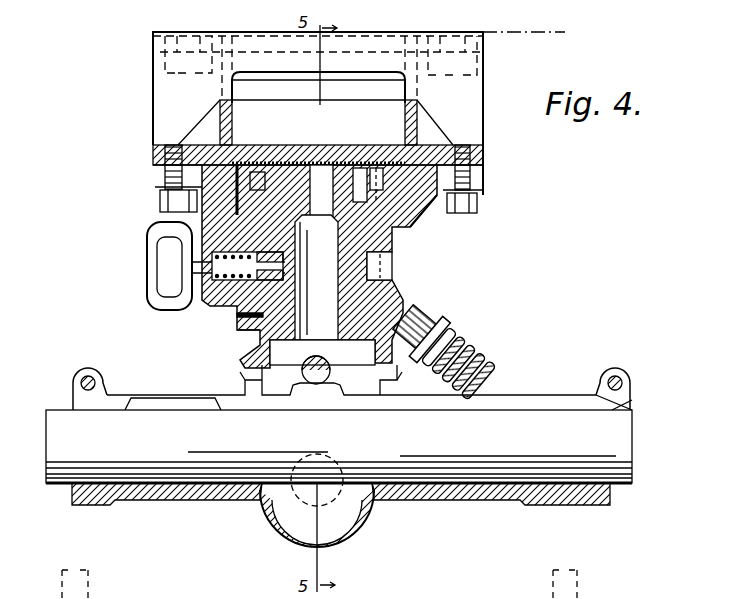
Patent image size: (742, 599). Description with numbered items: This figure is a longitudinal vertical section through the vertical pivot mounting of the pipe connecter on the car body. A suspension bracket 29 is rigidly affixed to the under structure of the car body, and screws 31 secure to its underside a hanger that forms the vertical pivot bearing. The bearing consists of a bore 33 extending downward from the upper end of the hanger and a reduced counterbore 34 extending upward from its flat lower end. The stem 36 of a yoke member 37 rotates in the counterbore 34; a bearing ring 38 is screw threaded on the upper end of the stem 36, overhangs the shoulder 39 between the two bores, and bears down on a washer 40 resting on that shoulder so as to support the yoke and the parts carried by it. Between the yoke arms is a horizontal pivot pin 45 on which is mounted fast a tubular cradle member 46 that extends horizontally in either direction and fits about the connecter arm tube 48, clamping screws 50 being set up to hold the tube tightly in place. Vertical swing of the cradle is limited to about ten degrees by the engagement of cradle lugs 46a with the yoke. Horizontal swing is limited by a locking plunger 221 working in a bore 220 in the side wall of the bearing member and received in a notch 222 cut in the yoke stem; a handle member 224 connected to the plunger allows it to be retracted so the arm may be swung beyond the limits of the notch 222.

The suspension bracket 29 is at (160, 118).
The screws 31 is at (162, 172).
The bore 33 is at (280, 168).
The counterbore 34 is at (290, 163).
The stem 36 is at (393, 264).
The yoke member 37 is at (442, 332).
The bearing ring 38 is at (360, 170).
The shoulder 39 is at (376, 190).
The washer 40 is at (400, 205).
The horizontal pivot pin 45 is at (282, 516).
The cradle member 46 is at (199, 503).
The cradle lugs 46a is at (243, 380).
The connecter arm tube 48 is at (339, 439).
The clamping screws 50 is at (92, 382).
The bore 220 is at (235, 310).
The locking plunger 221 is at (238, 335).
The notch 222 is at (250, 252).
The handle member 224 is at (148, 268).